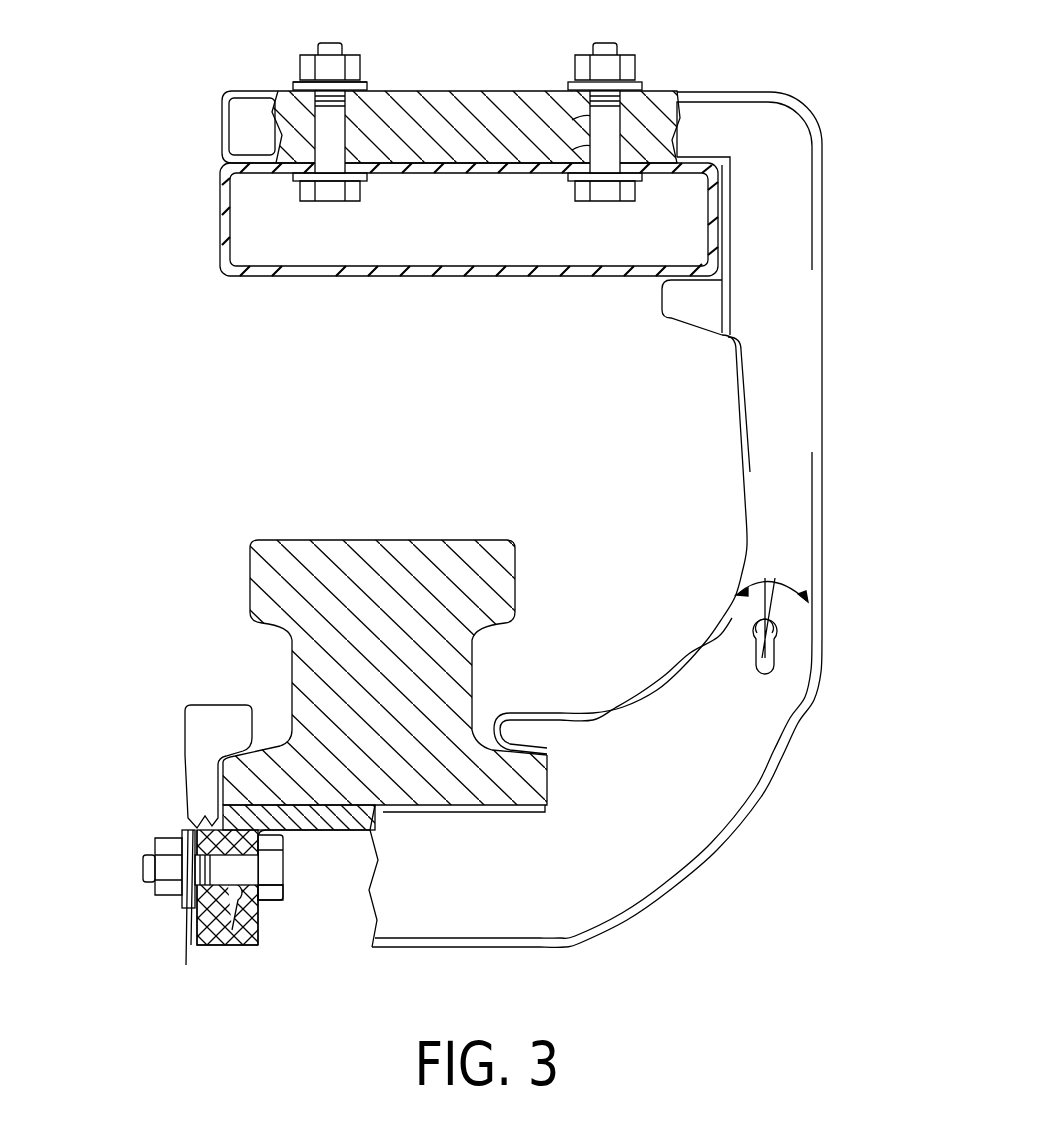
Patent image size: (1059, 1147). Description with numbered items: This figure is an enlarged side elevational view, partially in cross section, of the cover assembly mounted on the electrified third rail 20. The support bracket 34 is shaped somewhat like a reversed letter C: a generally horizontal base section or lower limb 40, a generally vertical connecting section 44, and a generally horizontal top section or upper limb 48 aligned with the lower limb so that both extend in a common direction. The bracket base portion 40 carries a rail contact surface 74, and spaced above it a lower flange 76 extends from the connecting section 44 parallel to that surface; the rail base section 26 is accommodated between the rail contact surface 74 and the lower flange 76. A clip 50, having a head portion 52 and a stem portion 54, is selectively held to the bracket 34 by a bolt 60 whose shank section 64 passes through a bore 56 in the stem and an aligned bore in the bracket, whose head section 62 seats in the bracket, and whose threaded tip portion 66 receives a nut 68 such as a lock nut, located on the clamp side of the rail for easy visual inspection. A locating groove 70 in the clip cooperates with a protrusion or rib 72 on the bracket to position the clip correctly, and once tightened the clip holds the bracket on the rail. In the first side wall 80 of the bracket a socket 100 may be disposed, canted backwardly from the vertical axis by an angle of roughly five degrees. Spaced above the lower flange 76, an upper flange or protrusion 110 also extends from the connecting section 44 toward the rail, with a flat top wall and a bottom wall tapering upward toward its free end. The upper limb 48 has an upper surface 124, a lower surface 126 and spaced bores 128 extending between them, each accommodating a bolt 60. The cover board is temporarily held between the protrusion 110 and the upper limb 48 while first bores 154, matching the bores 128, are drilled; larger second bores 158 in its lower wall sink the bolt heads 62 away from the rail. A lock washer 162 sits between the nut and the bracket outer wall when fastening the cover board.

The third rail 20 is at (413, 538).
The base section 26 is at (272, 765).
The support bracket 34 is at (822, 108).
The base section or lower limb 40 is at (688, 838).
The connecting section 44 is at (803, 552).
The top section or upper limb 48 is at (717, 120).
The clip 50 is at (185, 740).
The head portion 52 is at (215, 706).
The stem portion 54 is at (193, 780).
The bore 56 is at (205, 887).
The bolt 60 is at (370, 200).
The head section 62 is at (605, 196).
The shank section 64 is at (254, 888).
The tip portion 66 is at (147, 866).
The nut 68 is at (168, 880).
The locating groove 70 is at (200, 945).
The protrusion or rib 72 is at (232, 945).
The rail contact surface 74 is at (457, 780).
The lower flange 76 is at (525, 715).
The first side wall 80 is at (790, 378).
The socket 100 is at (774, 645).
The upper flange or protrusion 110 is at (688, 312).
The upper surface 124 is at (243, 91).
The lower surface 126 is at (253, 168).
The bores 128 is at (598, 123).
The first bores 154 is at (597, 143).
The second bore 158 is at (298, 272).
The lock washer 162 is at (370, 88).